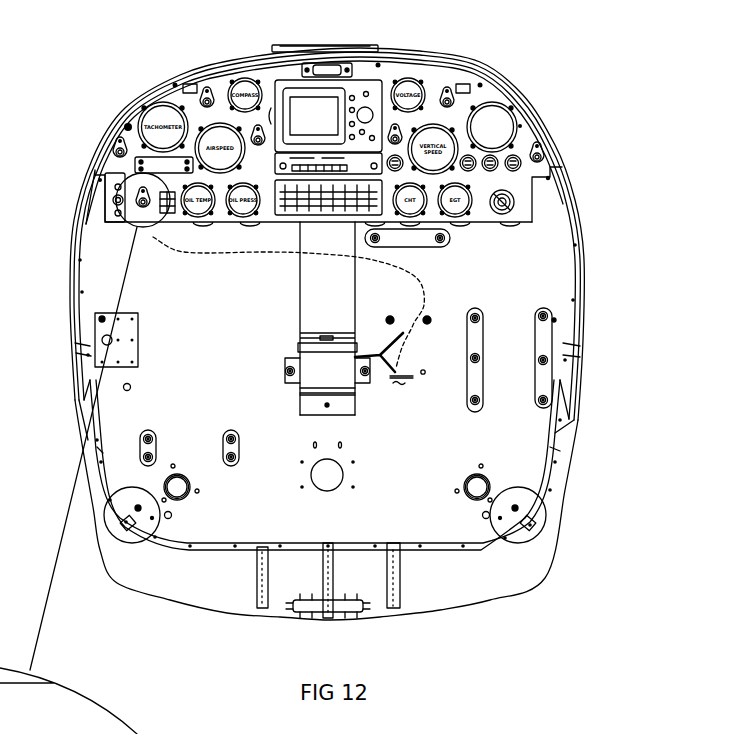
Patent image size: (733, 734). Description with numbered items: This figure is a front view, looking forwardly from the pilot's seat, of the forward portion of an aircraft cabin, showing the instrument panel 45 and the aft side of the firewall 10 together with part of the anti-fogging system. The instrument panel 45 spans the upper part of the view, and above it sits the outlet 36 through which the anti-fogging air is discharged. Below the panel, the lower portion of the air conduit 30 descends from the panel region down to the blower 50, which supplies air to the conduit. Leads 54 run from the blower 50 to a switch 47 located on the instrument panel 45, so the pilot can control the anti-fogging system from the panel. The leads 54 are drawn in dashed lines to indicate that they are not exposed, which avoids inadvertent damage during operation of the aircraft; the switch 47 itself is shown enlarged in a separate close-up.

The firewall 10 is at (542, 272).
The air conduit 30 is at (300, 288).
The outlet 36 is at (346, 48).
The instrument panel 45 is at (523, 127).
The switch 47 is at (112, 181).
The blower 50 is at (293, 360).
The leads 54 is at (425, 278).